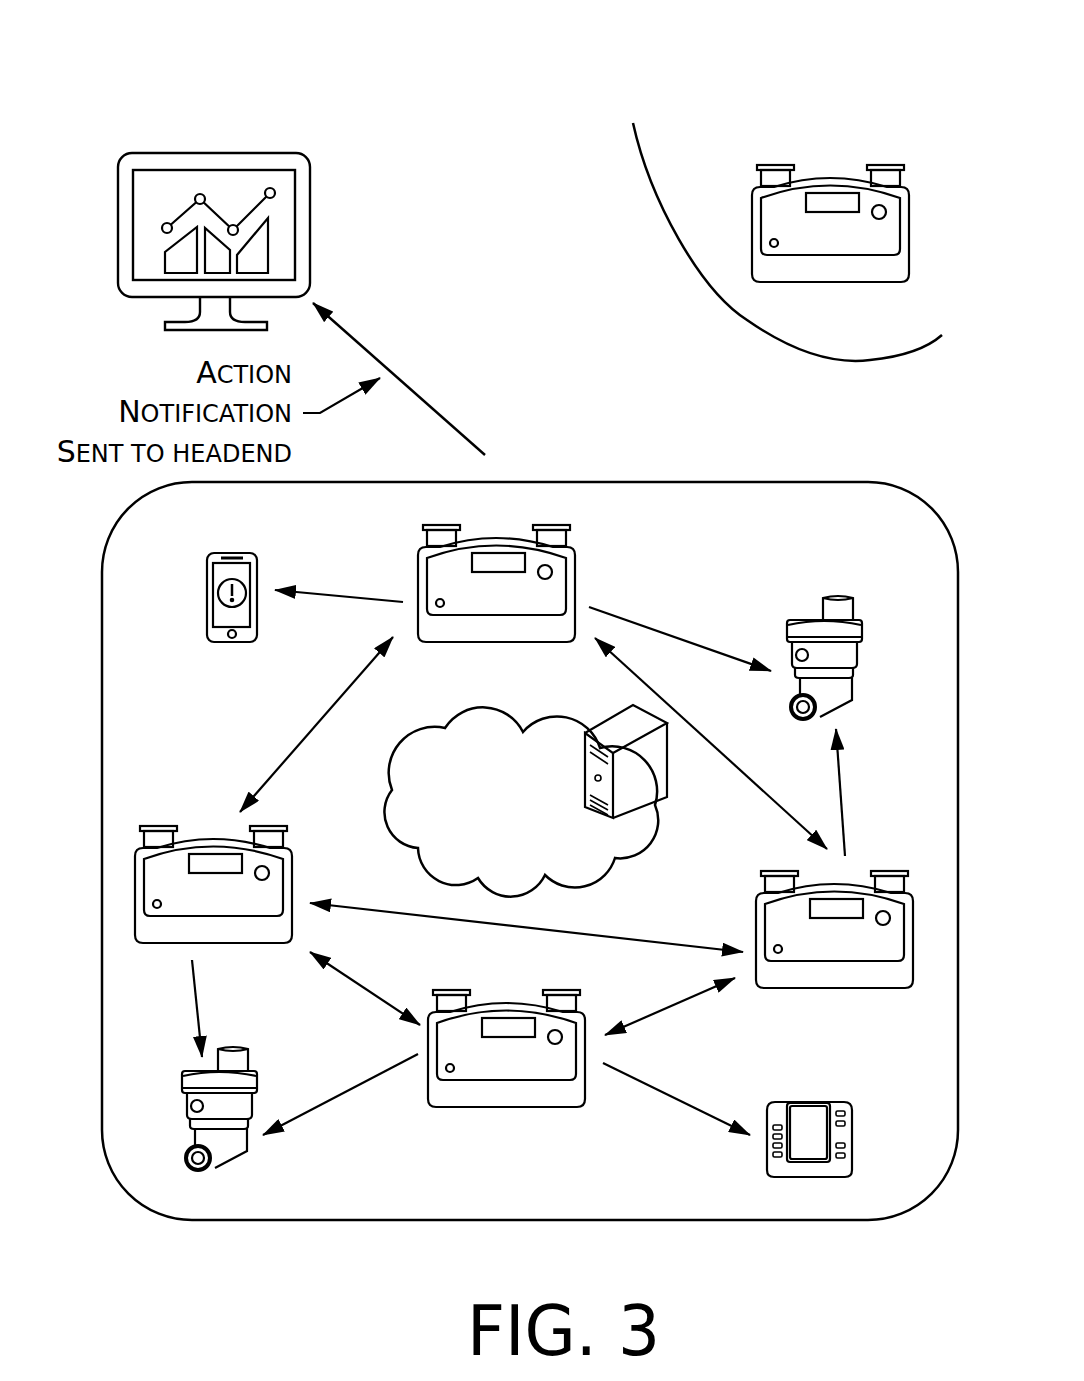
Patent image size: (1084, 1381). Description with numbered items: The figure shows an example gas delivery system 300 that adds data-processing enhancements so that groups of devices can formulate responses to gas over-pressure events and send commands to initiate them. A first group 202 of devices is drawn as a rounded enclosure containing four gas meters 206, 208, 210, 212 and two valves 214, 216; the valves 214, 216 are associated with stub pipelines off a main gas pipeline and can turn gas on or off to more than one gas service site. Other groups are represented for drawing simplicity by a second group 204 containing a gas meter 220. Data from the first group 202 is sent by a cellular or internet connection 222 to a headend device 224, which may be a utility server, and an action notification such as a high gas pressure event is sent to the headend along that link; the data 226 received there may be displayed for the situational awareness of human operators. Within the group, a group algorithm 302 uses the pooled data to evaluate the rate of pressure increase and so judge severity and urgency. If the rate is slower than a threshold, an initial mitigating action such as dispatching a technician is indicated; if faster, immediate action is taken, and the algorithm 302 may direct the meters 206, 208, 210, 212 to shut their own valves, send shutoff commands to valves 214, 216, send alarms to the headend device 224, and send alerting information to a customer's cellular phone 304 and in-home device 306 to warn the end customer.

The gas delivery system 300 is at (213, 68).
The first group of devices 202 is at (662, 484).
The group 204 is at (787, 338).
The gas meter 206 is at (580, 557).
The gas meter 208 is at (835, 1002).
The gas meter 210 is at (502, 1115).
The gas meter 212 is at (215, 830).
The valve 214 is at (783, 613).
The valve 216 is at (240, 1165).
The gas meter 220 is at (828, 172).
The cellular or internet connection 222 is at (387, 355).
The headend device 224 is at (317, 180).
The data 226 is at (252, 257).
The group algorithm 302 is at (493, 880).
The cellular phone 304 is at (238, 547).
The in-home device 306 is at (787, 1092).